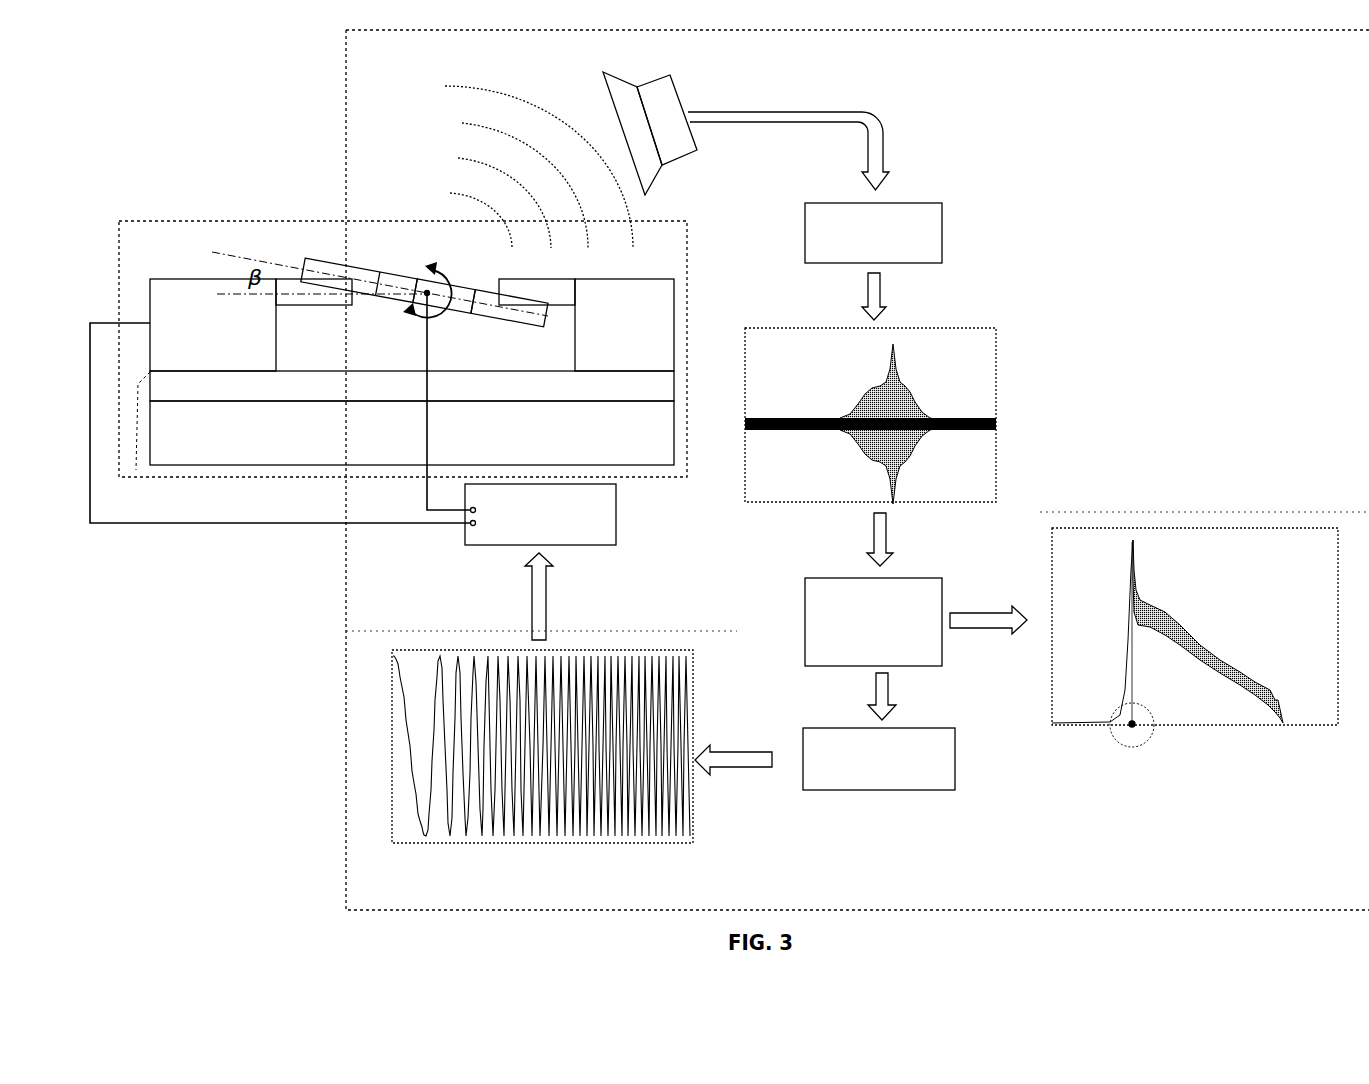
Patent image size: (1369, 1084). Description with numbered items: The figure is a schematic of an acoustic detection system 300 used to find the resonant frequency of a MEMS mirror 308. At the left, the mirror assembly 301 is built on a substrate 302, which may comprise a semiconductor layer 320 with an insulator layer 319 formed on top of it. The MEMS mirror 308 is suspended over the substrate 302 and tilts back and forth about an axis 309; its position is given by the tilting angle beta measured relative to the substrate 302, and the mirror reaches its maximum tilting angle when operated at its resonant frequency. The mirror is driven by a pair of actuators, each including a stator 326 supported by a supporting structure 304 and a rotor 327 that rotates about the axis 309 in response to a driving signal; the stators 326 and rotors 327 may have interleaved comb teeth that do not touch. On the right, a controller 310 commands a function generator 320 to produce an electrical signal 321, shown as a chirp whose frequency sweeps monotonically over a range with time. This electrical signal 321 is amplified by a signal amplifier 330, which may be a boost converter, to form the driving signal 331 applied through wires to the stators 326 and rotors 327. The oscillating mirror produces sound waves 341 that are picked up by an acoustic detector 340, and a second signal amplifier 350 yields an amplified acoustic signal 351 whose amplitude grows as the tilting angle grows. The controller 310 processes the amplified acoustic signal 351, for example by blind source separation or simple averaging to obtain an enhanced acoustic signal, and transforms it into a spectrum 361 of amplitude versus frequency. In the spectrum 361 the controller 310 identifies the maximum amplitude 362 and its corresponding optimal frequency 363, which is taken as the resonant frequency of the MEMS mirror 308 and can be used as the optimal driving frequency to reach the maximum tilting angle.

The acoustic detection system 300 is at (1356, 58).
The mirror assembly 301 is at (158, 246).
The substrate 302 is at (133, 430).
The supporting structure 304 is at (412, 325).
The MEMS mirror 308 is at (464, 291).
The axis 309 is at (421, 283).
The insulator layer 319 is at (412, 386).
The semiconductor layer 320 is at (552, 595).
The electrical signal 321 is at (678, 804).
The stator 326 is at (310, 307).
The rotor 327 is at (318, 256).
The signal amplifier 330 is at (540, 514).
The driving signal 331 is at (424, 500).
The acoustic detector 340 is at (613, 100).
The sound wave 341 is at (539, 167).
The signal amplifier 350 is at (873, 233).
The amplified acoustic signal 351 is at (995, 367).
The controller 310 is at (873, 622).
The spectrum 361 is at (1296, 537).
The maximum amplitude 362 is at (1137, 537).
The optimal frequency 363 is at (1178, 770).